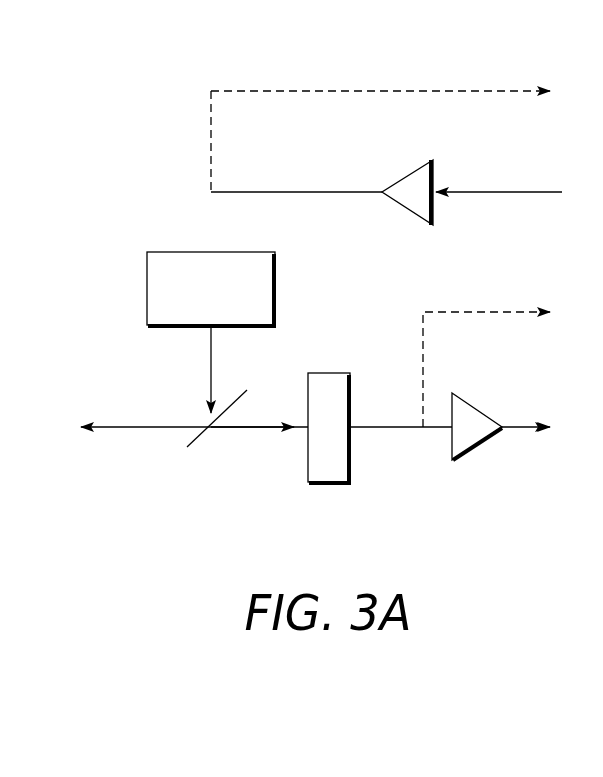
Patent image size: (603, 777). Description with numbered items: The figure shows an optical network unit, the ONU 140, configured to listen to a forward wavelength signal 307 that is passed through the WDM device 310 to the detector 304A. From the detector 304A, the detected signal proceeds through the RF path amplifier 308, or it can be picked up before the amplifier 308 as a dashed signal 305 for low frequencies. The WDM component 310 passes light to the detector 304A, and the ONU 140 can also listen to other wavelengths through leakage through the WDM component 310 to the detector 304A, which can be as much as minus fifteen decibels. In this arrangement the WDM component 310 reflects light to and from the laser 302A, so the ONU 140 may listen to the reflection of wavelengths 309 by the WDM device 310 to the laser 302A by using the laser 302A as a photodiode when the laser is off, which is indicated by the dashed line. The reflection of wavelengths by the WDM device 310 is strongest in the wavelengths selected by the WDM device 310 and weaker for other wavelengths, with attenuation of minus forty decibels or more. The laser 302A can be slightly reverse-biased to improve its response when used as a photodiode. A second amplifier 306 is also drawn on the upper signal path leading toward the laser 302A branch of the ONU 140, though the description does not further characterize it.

The optical network unit (ONU) 140 is at (230, 66).
The reflection of wavelengths 309 is at (386, 90).
The amplifier 306 is at (410, 172).
The laser 302A is at (259, 250).
The wave division multiplexer (WDM) device 310 is at (210, 485).
The detector 304A is at (335, 372).
The dashed signal 305 is at (493, 310).
The RF path amplifier 308 is at (477, 411).
The forward wavelength signal 307 is at (520, 432).